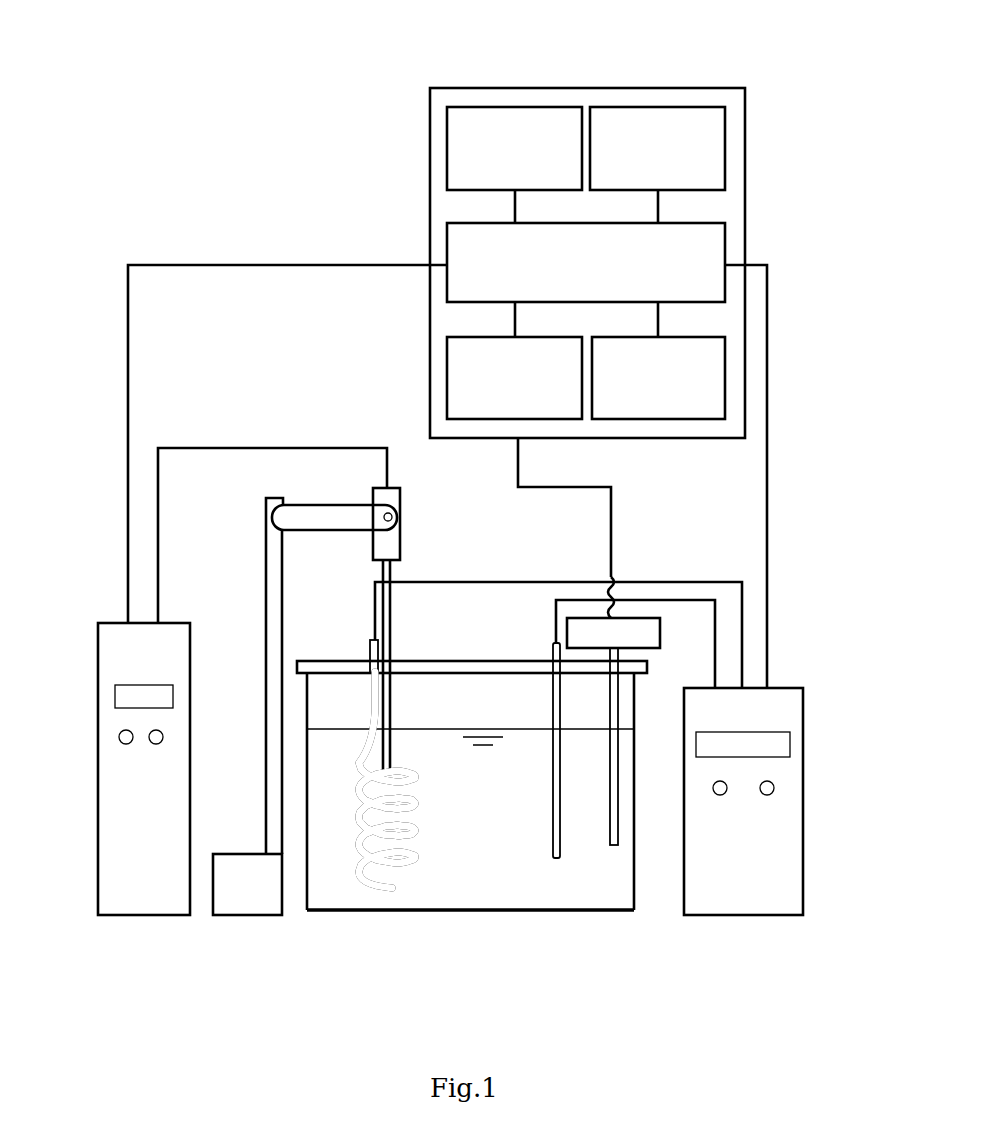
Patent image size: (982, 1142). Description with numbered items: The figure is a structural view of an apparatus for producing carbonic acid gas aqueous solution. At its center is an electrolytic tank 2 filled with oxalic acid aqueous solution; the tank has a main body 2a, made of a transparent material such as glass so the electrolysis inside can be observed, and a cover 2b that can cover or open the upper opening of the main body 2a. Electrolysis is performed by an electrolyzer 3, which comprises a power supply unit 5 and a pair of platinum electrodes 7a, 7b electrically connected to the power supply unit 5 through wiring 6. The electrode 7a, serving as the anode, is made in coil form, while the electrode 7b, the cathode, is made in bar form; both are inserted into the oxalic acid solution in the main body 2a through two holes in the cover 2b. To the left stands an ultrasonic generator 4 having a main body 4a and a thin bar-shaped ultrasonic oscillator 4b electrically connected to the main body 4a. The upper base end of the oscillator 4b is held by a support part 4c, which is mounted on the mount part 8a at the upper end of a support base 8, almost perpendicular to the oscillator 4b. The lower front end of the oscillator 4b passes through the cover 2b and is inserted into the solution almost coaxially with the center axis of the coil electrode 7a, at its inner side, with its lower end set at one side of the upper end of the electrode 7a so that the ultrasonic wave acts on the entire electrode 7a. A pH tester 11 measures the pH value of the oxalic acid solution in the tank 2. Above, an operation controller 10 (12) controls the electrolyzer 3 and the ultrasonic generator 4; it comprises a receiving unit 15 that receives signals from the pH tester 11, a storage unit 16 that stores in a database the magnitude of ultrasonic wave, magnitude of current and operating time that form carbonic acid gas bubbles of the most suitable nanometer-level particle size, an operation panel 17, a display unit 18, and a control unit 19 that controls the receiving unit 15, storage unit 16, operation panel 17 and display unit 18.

The operation controller 10 is at (629, 251).
The operation controller 12 is at (587, 263).
The display unit 18 is at (517, 107).
The operation panel 17 is at (677, 107).
The control unit 19 is at (688, 223).
The receiving unit 15 is at (497, 420).
The storage unit 16 is at (658, 420).
The wiring 6 is at (695, 582).
The ultrasonic generator 4 is at (168, 738).
The main body 4a is at (192, 703).
The ultrasonic oscillator 4b is at (392, 612).
The support part 4c is at (402, 500).
The support base 8 is at (248, 916).
The mount part 8a is at (325, 532).
The electrolytic tank 2 is at (482, 799).
The main body of electrolytic tank 2a is at (498, 910).
The cover 2b is at (493, 657).
The electrode 7a is at (400, 863).
The electrode 7b is at (557, 858).
The pH tester 11 is at (662, 634).
The electrolyzer 3 is at (756, 802).
The power supply unit 5 is at (740, 916).